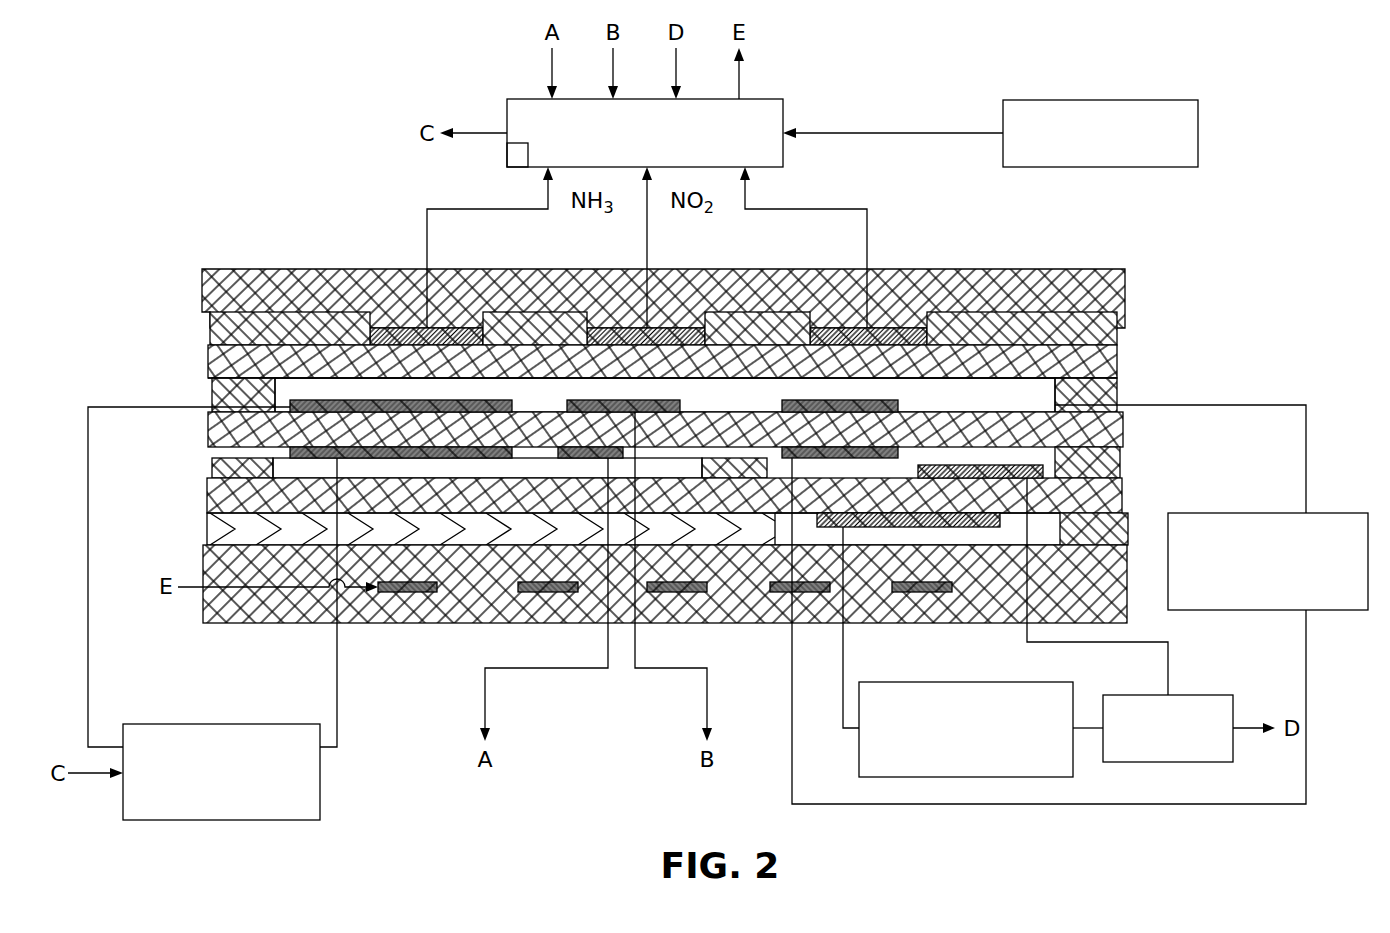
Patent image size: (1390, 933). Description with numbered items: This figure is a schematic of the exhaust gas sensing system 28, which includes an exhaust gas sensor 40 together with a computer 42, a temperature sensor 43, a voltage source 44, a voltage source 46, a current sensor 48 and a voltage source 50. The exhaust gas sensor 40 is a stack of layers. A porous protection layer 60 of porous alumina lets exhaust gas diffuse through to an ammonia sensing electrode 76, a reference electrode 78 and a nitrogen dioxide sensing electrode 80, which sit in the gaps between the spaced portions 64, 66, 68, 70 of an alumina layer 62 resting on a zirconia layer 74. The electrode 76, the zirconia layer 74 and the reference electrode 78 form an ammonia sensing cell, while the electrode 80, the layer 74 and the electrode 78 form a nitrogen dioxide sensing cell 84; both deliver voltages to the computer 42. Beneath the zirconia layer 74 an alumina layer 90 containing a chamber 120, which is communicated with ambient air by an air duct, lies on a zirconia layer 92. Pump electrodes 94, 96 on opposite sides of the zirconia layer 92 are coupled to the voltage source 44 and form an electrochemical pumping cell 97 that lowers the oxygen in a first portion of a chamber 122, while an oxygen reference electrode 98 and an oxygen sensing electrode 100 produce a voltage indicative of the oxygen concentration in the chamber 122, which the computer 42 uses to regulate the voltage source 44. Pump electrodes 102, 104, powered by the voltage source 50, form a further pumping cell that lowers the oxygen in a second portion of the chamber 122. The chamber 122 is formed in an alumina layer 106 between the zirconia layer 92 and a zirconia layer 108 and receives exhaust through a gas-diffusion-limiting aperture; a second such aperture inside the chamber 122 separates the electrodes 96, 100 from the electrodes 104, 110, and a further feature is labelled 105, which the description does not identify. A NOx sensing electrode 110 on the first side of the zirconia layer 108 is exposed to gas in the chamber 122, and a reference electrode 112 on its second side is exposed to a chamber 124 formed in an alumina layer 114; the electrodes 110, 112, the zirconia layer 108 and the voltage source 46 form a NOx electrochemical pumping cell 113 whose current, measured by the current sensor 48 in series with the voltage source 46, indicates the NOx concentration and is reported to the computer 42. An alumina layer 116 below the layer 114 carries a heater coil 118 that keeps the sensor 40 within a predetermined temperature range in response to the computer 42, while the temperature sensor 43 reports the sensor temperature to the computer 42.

The exhaust gas sensing system 28 is at (1030, 222).
The exhaust gas sensor 40 is at (1089, 260).
The computer 42 is at (765, 99).
The temperature sensor 43 is at (516, 153).
The voltage source 44 is at (222, 724).
The voltage source 46 is at (897, 682).
The current sensor 48 is at (1200, 695).
The voltage source 50 is at (1192, 513).
The porous protection layer 60 is at (202, 292).
The alumina layer 62 is at (200, 333).
The portion of alumina layer 64 is at (280, 348).
The portion of alumina layer 66 is at (525, 348).
The portion of alumina layer 68 is at (747, 348).
The portion of alumina layer 70 is at (1012, 348).
The zirconia layer 74 is at (208, 358).
The NH3 sensing electrode 76 is at (402, 337).
The reference electrode 78 is at (615, 332).
The NO2 sensing electrode 80 is at (452, 308).
The NO2 sensing cell 84 is at (898, 305).
The alumina layer 90 is at (212, 390).
The zirconia layer 92 is at (208, 425).
The pump electrode 94 is at (370, 400).
The pump electrode 96 is at (372, 458).
The electrochemical pumping cell 97 is at (491, 390).
The O2 reference electrode 98 is at (623, 400).
The oxygen sensing electrode 100 is at (582, 458).
The pump electrode 102 is at (842, 400).
The pump electrode 104 is at (840, 458).
The chamber passage 105 is at (898, 386).
The alumina layer 106 is at (212, 462).
The zirconia layer 108 is at (207, 495).
The NOx sensing electrode 110 is at (982, 466).
The reference electrode 112 is at (985, 518).
The NOx electrochemical pumping cell 113 is at (1025, 452).
The alumina layer 114 is at (207, 522).
The alumina layer 116 is at (203, 555).
The heater coil 118 is at (405, 593).
The chamber 120 is at (715, 407).
The chamber 122 is at (654, 475).
The chamber 124 is at (866, 533).